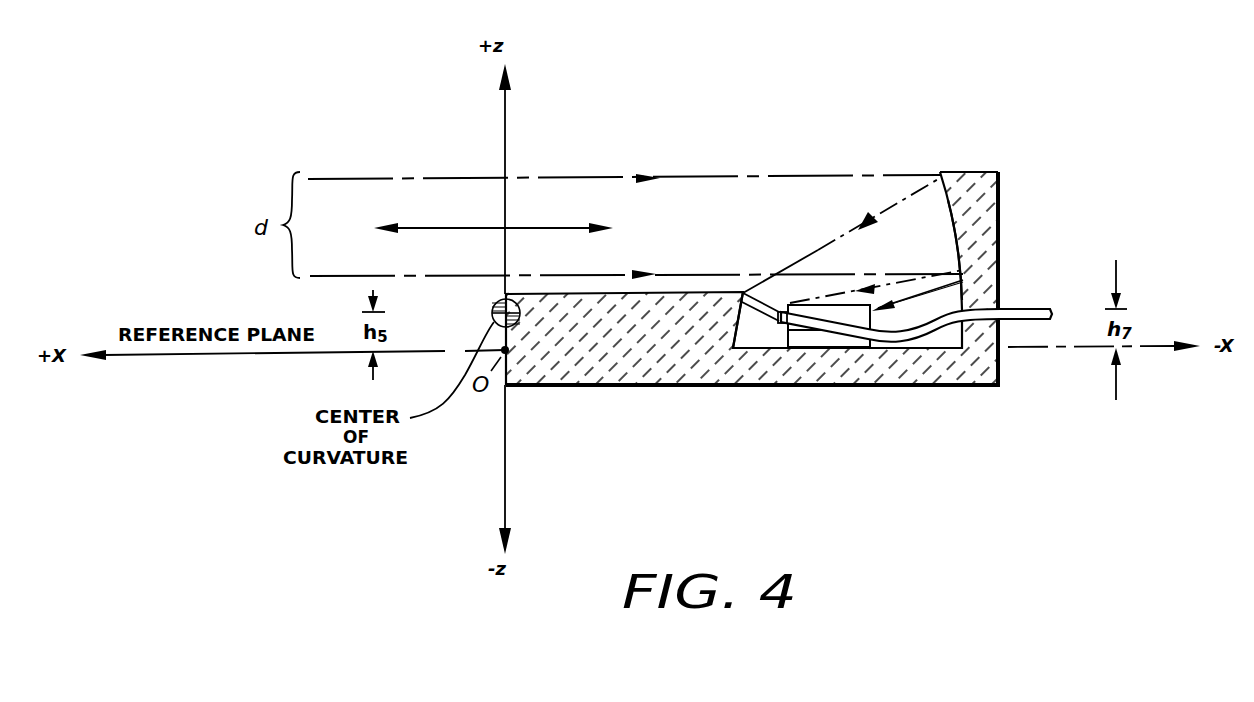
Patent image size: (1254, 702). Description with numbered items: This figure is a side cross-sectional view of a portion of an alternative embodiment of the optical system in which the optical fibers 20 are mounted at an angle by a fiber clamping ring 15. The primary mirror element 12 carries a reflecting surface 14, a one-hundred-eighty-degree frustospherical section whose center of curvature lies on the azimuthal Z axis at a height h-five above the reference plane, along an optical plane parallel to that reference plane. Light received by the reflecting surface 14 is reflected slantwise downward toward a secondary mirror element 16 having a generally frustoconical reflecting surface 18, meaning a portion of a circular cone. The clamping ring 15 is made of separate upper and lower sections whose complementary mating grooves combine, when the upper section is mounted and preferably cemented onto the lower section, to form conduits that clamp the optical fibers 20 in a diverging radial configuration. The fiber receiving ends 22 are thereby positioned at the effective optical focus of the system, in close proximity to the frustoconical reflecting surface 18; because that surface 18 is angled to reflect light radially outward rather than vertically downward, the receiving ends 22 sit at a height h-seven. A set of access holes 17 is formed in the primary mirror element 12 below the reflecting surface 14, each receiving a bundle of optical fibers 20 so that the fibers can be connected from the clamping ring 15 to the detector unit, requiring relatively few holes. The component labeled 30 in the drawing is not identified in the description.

The primary mirror element 12 is at (960, 171).
The reflecting surface 14 is at (960, 229).
The fiber clamping ring 15 is at (963, 282).
The secondary mirror element 16 is at (679, 270).
The access holes 17 is at (1004, 306).
The frustoconical reflecting surface 18 is at (738, 328).
The optical fibers 20 is at (1016, 322).
The receiving ends 22 is at (781, 330).
The substrate block 30 is at (998, 207).